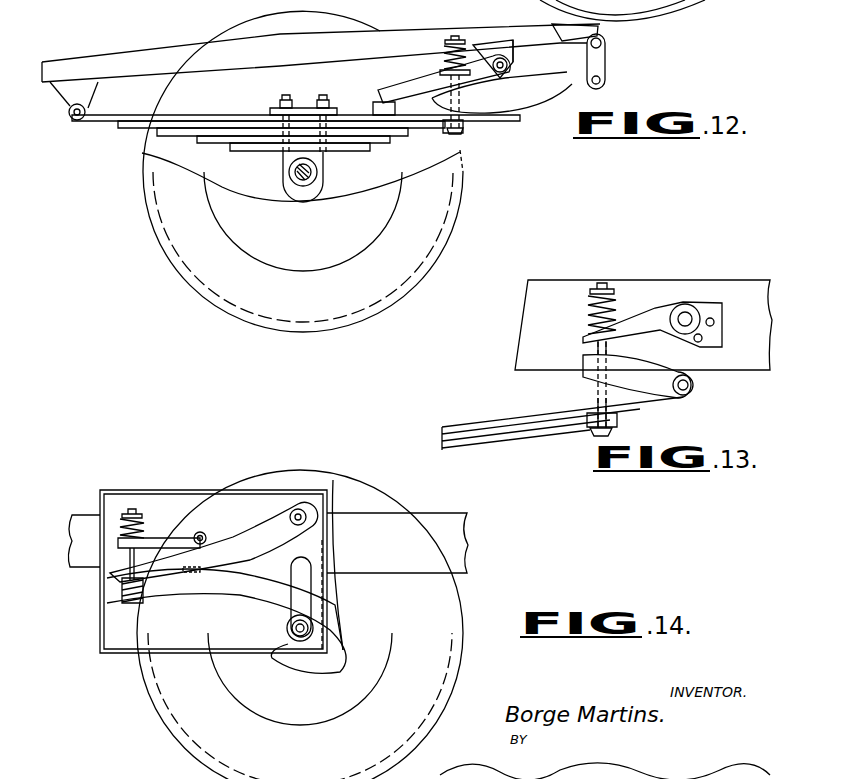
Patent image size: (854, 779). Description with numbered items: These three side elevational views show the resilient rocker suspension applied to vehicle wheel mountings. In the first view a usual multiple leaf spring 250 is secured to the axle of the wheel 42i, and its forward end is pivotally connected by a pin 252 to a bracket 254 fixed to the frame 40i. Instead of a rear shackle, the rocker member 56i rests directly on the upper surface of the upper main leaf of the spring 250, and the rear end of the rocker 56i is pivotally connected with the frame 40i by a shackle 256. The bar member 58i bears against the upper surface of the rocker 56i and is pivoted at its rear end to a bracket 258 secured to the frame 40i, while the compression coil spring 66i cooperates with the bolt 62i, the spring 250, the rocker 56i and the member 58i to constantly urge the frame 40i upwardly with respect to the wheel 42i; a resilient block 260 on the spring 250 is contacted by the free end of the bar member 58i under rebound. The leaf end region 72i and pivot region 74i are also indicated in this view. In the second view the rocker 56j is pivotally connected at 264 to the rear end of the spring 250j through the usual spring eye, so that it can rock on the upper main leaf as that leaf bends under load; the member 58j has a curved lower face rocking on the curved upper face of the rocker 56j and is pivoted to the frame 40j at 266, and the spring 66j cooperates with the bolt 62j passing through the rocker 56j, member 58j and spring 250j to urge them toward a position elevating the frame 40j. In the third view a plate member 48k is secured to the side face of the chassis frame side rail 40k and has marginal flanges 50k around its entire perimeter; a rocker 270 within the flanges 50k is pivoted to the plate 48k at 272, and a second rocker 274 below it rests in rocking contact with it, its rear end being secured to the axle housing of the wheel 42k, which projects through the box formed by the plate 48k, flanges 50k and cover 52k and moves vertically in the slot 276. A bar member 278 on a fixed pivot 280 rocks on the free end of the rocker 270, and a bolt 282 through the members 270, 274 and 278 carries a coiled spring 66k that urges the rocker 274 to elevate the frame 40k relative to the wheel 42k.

In FIG. 12, the frame 40i is at (100, 58).
In FIG. 12, the wheel 42i is at (448, 237).
In FIG. 12, the multiple leaf spring 250 is at (120, 128).
In FIG. 12, the pin 252 is at (70, 122).
In FIG. 12, the bracket 254 is at (96, 98).
In FIG. 12, the shackle 256 is at (573, 64).
In FIG. 12, the bracket 258 is at (512, 42).
In FIG. 12, the resilient block 260 is at (372, 104).
In FIG. 12, the rocker member 56i is at (474, 101).
In FIG. 12, the bar member 58i is at (404, 90).
In FIG. 12, the bolt 62i is at (453, 136).
In FIG. 12, the compression coil spring 66i is at (448, 52).
In FIG. 12, the top leaf 72i is at (490, 122).
In FIG. 12, the bracket 74i is at (492, 46).
In FIG. 13, the frame 40j is at (527, 308).
In FIG. 13, the spring 66j is at (588, 317).
In FIG. 13, the pivot 266 is at (687, 310).
In FIG. 13, the member 58j is at (617, 347).
In FIG. 13, the rocker 56j is at (610, 384).
In FIG. 13, the bolt 62j is at (598, 392).
In FIG. 13, the pivot 264 is at (694, 386).
In FIG. 13, the spring 250j is at (496, 422).
In FIG. 14, the chassis frame side rail 40k is at (462, 540).
In FIG. 14, the wheel 42k is at (452, 690).
In FIG. 14, the marginal flanges 50k is at (190, 492).
In FIG. 14, the plate member 48k is at (213, 571).
In FIG. 14, the coiled spring 66k is at (118, 520).
In FIG. 14, the bar member 278 is at (153, 538).
In FIG. 14, the fixed pivot 280 is at (201, 532).
In FIG. 14, the bolt 282 is at (125, 590).
In FIG. 14, the pivot 272 is at (306, 505).
In FIG. 14, the rocker 270 is at (276, 531).
In FIG. 14, the second rocker 274 is at (175, 587).
In FIG. 14, the slot 276 is at (312, 602).
In FIG. 14, the cover 52k is at (275, 642).